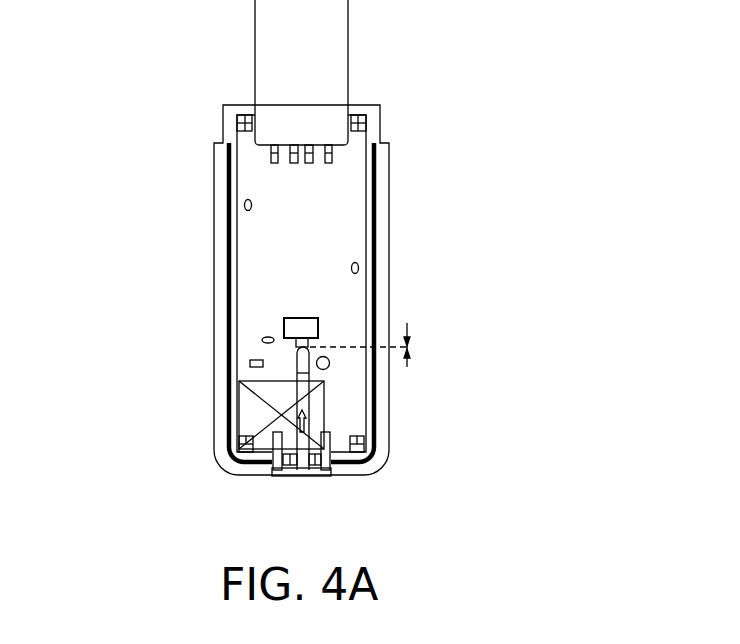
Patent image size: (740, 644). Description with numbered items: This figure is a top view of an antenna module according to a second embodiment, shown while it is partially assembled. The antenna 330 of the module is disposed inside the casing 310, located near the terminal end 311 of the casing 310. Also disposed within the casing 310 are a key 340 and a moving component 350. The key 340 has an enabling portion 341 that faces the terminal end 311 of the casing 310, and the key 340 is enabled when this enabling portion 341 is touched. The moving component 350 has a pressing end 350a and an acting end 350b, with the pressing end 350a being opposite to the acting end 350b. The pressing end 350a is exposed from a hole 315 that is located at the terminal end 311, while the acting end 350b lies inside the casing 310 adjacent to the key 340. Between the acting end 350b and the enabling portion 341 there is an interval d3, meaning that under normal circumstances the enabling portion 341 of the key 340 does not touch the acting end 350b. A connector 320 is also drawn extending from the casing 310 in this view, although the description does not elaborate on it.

The casing 310 is at (208, 290).
The terminal end 311 is at (198, 462).
The hole 315 is at (262, 483).
The connector 320 is at (265, 32).
The antenna 330 is at (257, 415).
The key 340 is at (268, 320).
The enabling portion 341 is at (296, 342).
The moving component 350 is at (450, 424).
The pressing end 350a is at (317, 477).
The acting end 350b is at (303, 367).
The interval d3 is at (378, 345).